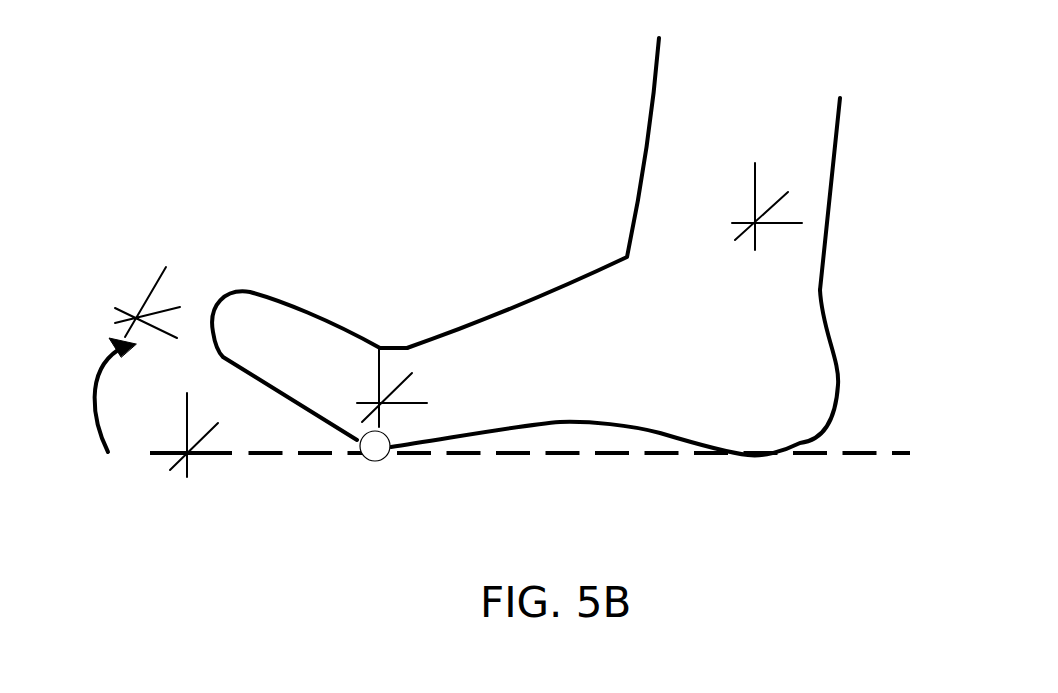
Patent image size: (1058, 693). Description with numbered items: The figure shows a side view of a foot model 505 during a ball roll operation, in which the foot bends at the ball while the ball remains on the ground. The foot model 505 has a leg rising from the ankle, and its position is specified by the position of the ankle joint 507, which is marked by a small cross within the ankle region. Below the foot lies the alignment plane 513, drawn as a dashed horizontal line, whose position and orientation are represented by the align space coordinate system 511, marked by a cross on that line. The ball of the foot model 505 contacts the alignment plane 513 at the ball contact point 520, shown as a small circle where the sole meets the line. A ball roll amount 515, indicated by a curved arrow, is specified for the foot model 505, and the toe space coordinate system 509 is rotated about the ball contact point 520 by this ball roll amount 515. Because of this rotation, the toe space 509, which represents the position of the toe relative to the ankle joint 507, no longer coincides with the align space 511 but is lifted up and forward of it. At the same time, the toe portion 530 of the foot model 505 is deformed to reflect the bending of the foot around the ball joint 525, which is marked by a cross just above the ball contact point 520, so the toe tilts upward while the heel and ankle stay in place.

The foot model 505 is at (623, 193).
The ankle joint 507 is at (770, 234).
The toe space coordinate system 509 is at (151, 346).
The align space coordinate system 511 is at (244, 440).
The alignment plane 513 is at (900, 447).
The ball roll amount 515 is at (94, 395).
The ball contact point 520 is at (387, 453).
The ball joint 525 is at (422, 387).
The toe portion 530 is at (335, 327).